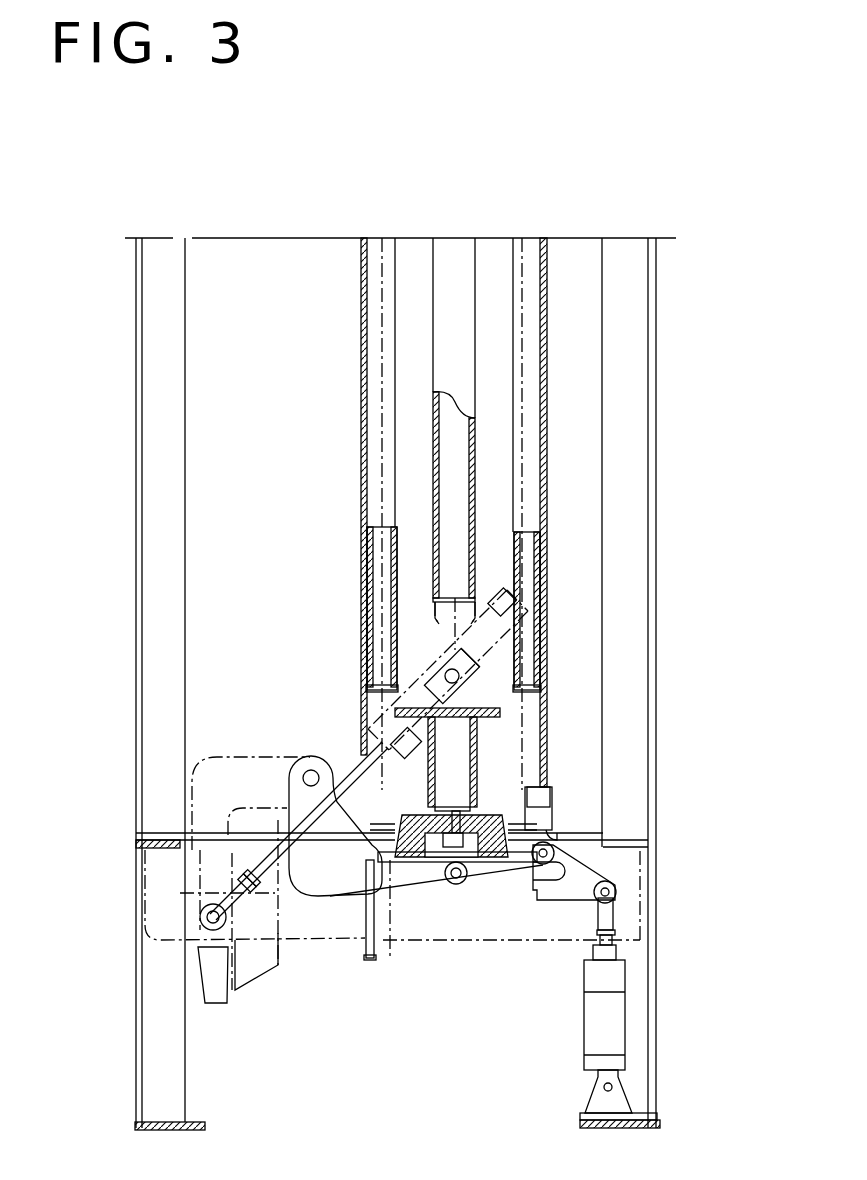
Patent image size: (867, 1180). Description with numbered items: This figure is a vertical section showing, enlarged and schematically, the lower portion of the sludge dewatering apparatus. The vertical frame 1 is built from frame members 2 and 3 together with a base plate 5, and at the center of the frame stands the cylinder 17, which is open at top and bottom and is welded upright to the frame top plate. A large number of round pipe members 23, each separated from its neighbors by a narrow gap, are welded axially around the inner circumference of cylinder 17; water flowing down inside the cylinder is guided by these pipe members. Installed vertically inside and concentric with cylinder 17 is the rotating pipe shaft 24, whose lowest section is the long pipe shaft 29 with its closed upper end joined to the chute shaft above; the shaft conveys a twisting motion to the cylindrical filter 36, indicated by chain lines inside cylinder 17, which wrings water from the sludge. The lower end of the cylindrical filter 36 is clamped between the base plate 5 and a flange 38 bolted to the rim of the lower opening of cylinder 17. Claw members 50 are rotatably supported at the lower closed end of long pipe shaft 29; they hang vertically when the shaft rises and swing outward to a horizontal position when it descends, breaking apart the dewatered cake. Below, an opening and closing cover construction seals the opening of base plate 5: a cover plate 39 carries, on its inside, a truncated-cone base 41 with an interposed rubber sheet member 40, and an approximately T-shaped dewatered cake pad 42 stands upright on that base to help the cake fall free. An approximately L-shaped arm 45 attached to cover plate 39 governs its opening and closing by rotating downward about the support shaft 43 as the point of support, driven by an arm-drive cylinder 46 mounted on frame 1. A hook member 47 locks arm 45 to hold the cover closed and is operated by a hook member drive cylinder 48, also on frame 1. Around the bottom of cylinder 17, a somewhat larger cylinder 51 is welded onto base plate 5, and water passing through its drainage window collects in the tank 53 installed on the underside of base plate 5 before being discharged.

The vertical frame 1 is at (657, 428).
The frame member 2 is at (155, 522).
The frame member 3 is at (140, 1025).
The base plate 5 is at (190, 830).
The cylinder 17 is at (362, 413).
The round pipe members 23 is at (372, 572).
The rotating pipe shaft 24 is at (440, 322).
The long pipe shaft 29 is at (475, 463).
The cylindrical filter 36 is at (383, 362).
The flange 38 is at (550, 812).
The cover plate 39 is at (392, 958).
The rubber sheet member 40 is at (397, 860).
The truncated-cone base 41 is at (503, 860).
The dewatered cake pad 42 is at (500, 708).
The support shaft 43 is at (313, 765).
The arm 45 is at (205, 875).
The arm-drive cylinder 46 is at (498, 637).
The hook member 47 is at (580, 888).
The hook member drive cylinder 48 is at (620, 1025).
The claw members 50 is at (440, 615).
The cylinder 51 is at (552, 793).
The tank 53 is at (330, 940).